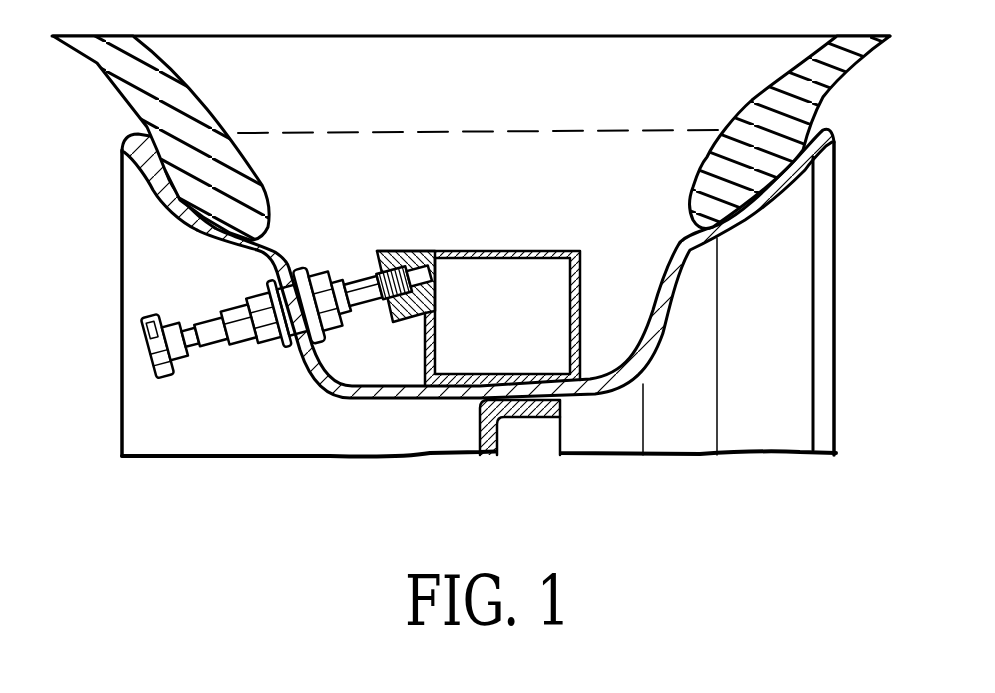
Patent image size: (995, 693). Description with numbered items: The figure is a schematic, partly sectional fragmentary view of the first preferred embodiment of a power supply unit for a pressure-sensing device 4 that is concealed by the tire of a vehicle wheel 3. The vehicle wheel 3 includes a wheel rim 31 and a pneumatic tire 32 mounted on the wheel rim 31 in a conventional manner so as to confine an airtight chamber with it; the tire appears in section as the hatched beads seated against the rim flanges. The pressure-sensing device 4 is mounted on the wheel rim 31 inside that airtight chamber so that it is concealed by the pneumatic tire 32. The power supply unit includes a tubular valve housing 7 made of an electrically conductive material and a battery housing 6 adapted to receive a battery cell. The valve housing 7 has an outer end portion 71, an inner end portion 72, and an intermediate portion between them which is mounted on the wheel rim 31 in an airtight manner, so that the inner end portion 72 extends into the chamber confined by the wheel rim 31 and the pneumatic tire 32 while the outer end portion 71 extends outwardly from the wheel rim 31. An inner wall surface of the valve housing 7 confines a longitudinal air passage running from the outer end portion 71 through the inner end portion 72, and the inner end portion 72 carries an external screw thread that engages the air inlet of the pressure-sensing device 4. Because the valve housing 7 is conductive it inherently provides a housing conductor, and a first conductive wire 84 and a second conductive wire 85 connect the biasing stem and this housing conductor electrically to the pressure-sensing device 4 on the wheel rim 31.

The vehicle wheel 3 is at (438, 263).
The wheel rim 31 is at (148, 184).
The pneumatic tire 32 is at (104, 62).
The pressure-sensing device 4 is at (478, 273).
The battery housing 6 is at (172, 380).
The tubular valve housing 7 is at (318, 311).
The outer end portion 71 is at (228, 310).
The inner end portion 72 is at (357, 290).
The first conductive wire 84 is at (440, 274).
The second conductive wire 85 is at (446, 257).